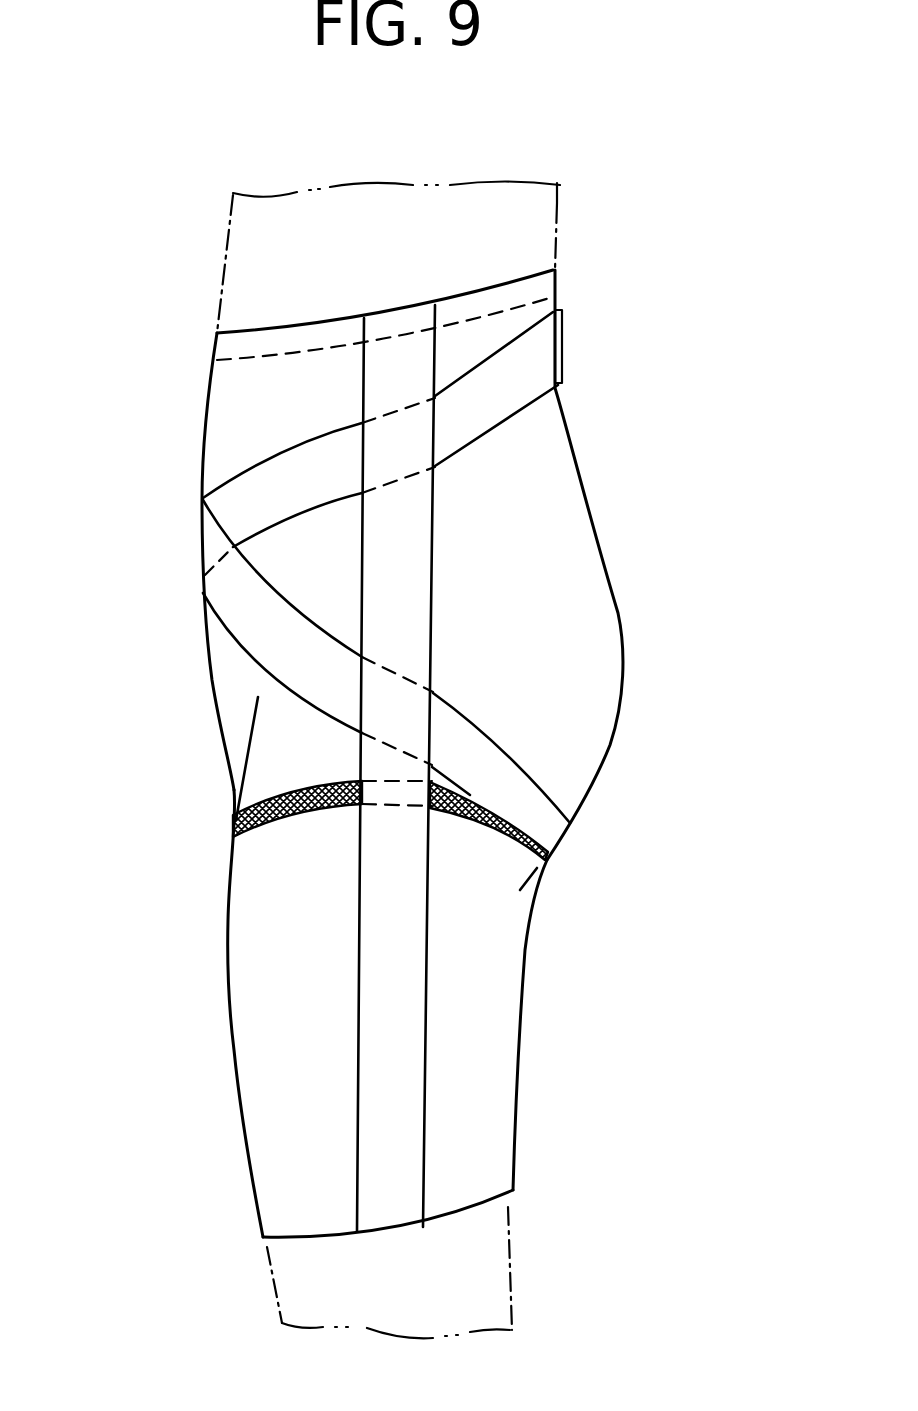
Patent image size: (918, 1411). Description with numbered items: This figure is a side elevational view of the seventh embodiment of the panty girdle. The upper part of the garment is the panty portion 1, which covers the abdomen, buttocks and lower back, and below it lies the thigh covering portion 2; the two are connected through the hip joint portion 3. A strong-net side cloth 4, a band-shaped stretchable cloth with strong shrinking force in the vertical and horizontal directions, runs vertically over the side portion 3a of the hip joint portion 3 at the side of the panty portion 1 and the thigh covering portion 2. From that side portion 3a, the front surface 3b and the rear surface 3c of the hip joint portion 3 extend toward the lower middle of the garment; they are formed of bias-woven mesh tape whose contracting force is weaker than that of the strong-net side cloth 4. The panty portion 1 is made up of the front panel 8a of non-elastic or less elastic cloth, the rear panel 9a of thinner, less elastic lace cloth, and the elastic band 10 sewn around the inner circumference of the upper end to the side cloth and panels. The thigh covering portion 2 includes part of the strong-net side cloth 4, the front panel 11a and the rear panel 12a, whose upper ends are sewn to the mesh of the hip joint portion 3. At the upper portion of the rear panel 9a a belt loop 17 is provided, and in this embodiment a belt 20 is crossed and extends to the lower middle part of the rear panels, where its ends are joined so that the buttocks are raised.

The panty portion 1 is at (104, 337).
The thigh covering portion 2 is at (104, 1225).
The hip joint portion 3 is at (320, 890).
The side portion of hip joint portion 3a is at (378, 836).
The front surface of hip joint portion 3b is at (228, 826).
The rear surface of hip joint portion 3c is at (460, 812).
The strong-net side cloth 4 is at (388, 377).
The front panel 8a is at (240, 657).
The rear panel 9a is at (563, 637).
The elastic band 10 is at (485, 307).
The front panel of thigh covering portion 11a is at (287, 1130).
The rear panel of thigh covering portion 12a is at (445, 1118).
The belt loop 17 is at (563, 347).
The belt 20 is at (490, 441).